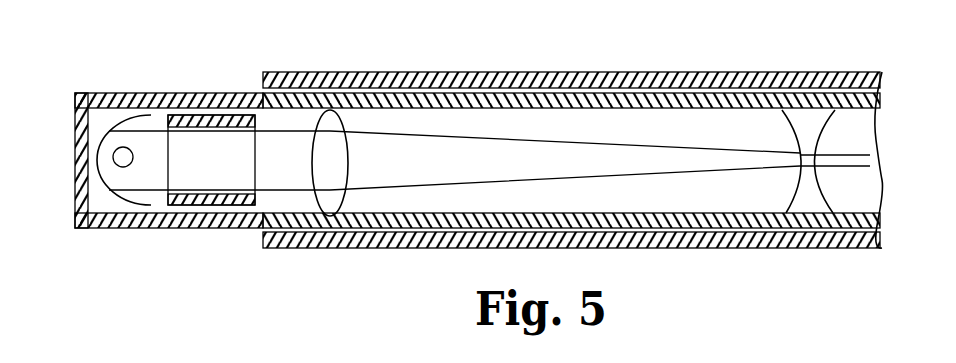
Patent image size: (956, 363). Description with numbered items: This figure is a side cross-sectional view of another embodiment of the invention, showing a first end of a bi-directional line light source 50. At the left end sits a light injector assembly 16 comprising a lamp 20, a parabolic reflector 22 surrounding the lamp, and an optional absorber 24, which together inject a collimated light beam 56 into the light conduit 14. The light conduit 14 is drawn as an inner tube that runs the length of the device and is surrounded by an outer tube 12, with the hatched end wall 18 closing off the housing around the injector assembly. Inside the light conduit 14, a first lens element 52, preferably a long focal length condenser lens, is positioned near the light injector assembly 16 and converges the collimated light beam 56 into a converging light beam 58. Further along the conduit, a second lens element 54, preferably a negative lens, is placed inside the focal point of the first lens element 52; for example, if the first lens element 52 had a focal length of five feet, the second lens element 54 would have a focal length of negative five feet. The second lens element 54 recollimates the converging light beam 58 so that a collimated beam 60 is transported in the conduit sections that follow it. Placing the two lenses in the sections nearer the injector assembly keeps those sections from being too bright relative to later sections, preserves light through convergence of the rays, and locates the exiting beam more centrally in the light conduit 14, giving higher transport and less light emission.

The outer tube 12 is at (358, 250).
The light conduit 14 is at (332, 229).
The light injector assembly 16 is at (101, 234).
The housing end wall 18 is at (76, 188).
The lamp 20 is at (100, 137).
The parabolic reflector 22 is at (128, 117).
The absorber 24 is at (217, 115).
The bi-directional line light source 50 is at (167, 73).
The first lens element 52 is at (350, 138).
The second lens element 54 is at (790, 128).
The collimated light beam 56 is at (293, 127).
The converging light beam 58 is at (613, 143).
The collimated beam 60 is at (843, 147).